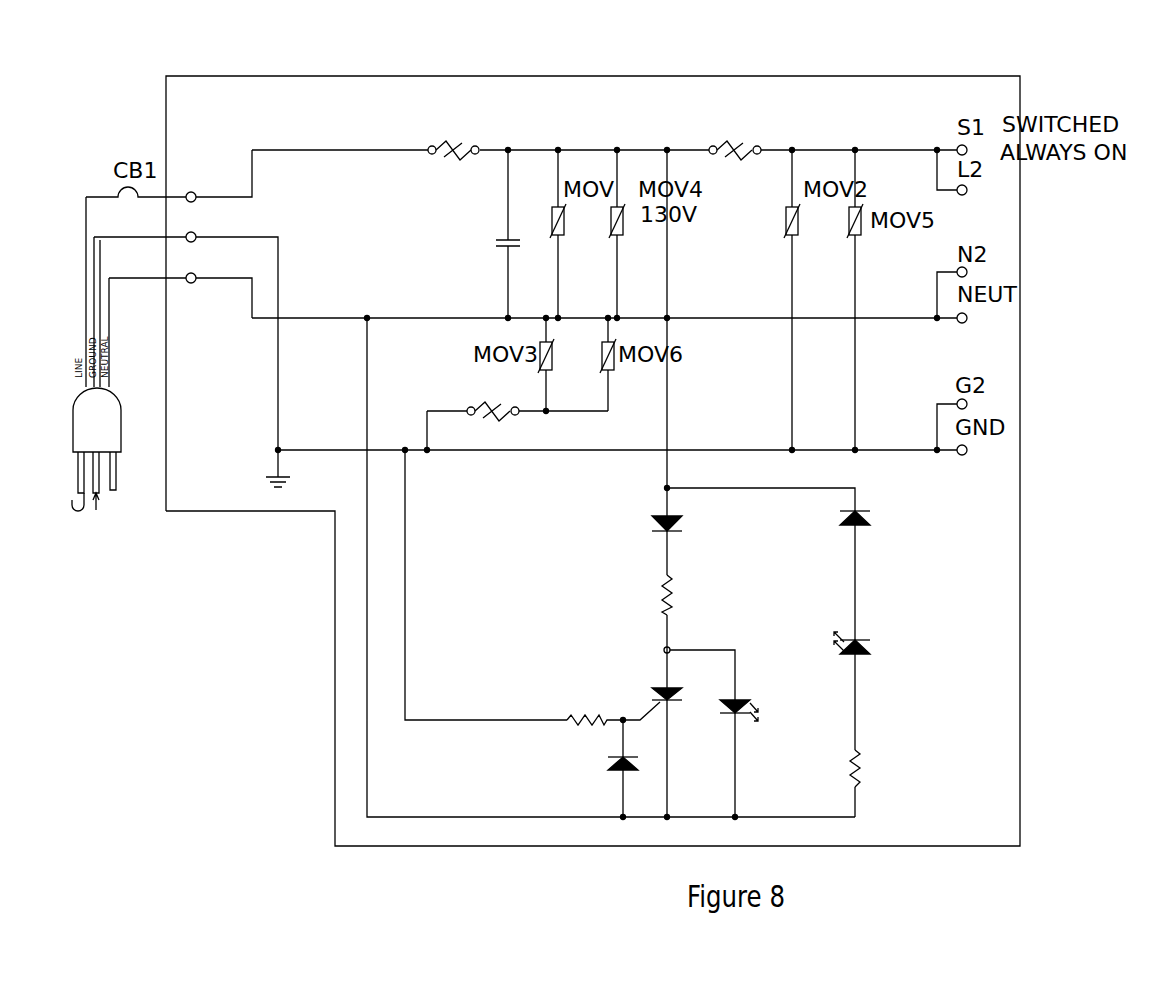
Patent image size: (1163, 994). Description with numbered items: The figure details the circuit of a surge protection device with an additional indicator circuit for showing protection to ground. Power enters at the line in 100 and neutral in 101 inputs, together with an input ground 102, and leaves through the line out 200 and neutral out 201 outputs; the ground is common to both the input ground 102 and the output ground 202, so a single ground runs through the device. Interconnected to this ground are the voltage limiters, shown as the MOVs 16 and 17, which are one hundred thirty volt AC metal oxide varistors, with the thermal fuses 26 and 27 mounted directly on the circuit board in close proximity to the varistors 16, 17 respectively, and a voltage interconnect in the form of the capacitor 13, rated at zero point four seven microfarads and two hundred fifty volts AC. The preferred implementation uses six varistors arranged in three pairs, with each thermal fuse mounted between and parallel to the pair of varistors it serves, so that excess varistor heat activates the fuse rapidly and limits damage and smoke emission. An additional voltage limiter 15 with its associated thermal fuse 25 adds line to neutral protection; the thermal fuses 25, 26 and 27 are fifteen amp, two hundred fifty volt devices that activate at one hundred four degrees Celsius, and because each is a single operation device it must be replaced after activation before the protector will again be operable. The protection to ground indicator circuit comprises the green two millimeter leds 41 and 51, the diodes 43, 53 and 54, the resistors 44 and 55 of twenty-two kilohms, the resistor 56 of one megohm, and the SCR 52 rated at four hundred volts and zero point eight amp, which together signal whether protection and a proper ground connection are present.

The capacitor 13 is at (482, 242).
The voltage limiter 15 is at (562, 242).
The MOV 16 is at (831, 254).
The MOV 17 is at (552, 378).
The thermal fuse 25 is at (475, 140).
The thermal fuse 26 is at (757, 140).
The thermal fuse 27 is at (493, 433).
The led 41 is at (875, 645).
The diode 43 is at (875, 506).
The resistor 44 is at (875, 763).
The led 51 is at (748, 678).
The SCR 52 is at (655, 692).
The diode 53 is at (649, 523).
The diode 54 is at (606, 763).
The resistor 55 is at (652, 603).
The resistor 56 is at (581, 670).
The line in 100 is at (259, 195).
The neutral in 101 is at (260, 277).
The input ground 102 is at (284, 235).
The line out 200 is at (995, 181).
The neutral out 201 is at (990, 312).
The output ground 202 is at (990, 443).